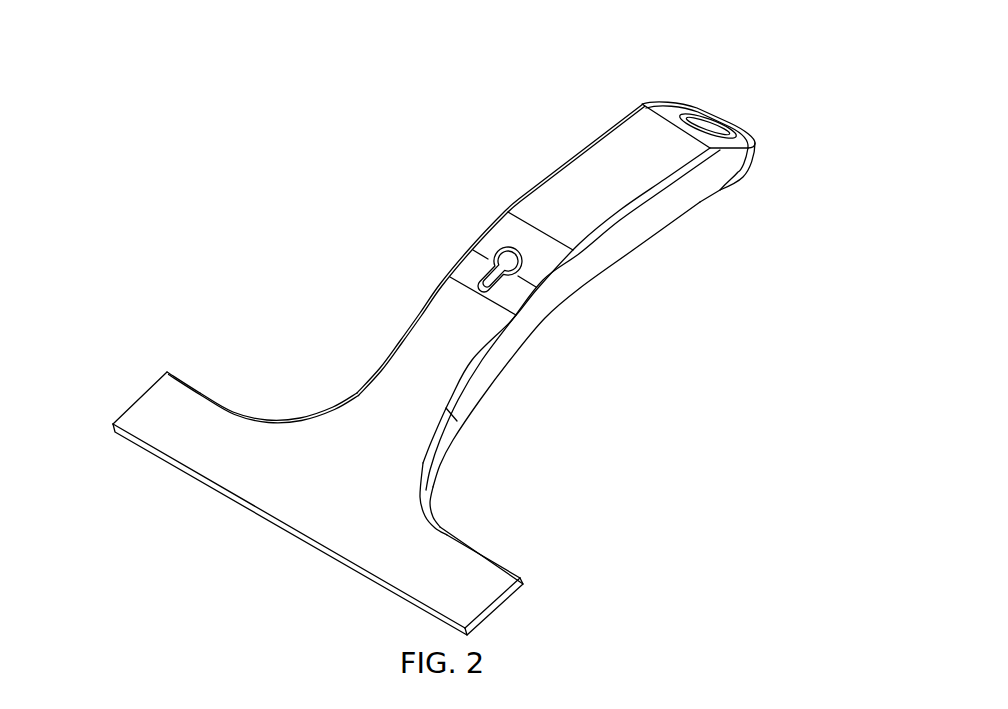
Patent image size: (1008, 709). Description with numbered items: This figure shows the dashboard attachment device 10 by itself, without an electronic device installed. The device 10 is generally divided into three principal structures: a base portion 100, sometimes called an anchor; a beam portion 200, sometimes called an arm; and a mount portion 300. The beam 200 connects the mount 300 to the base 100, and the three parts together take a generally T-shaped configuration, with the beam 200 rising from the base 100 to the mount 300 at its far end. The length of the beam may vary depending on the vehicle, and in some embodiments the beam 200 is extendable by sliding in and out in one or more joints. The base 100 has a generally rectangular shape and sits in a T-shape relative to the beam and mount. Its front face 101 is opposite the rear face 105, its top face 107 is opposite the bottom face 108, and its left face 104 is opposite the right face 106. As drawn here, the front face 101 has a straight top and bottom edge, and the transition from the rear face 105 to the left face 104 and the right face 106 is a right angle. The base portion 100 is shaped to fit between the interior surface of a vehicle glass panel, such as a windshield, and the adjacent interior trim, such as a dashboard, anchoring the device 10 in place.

The dashboard attachment device 10 is at (460, 44).
The base portion 100 is at (193, 582).
The front face 101 is at (122, 438).
The left face 104 is at (133, 398).
The rear face 105 is at (213, 386).
The right face 106 is at (505, 603).
The top face 107 is at (318, 512).
The bottom face 108 is at (208, 496).
The beam portion 200 is at (540, 207).
The mount portion 300 is at (770, 141).